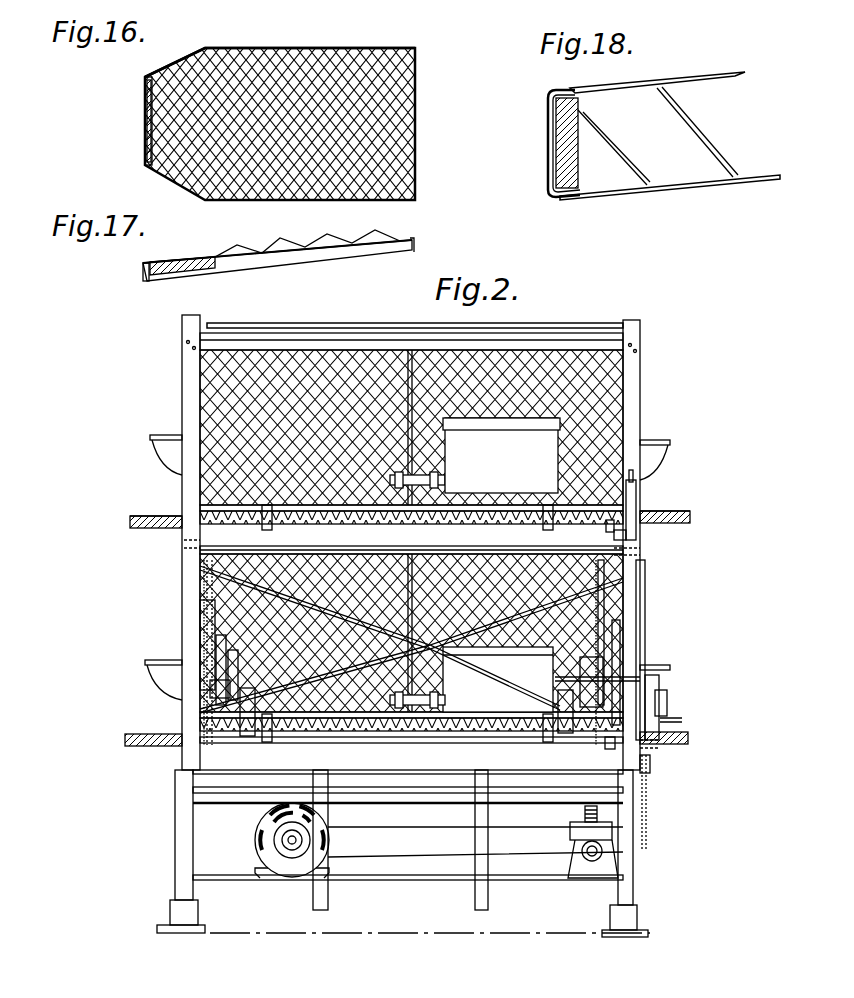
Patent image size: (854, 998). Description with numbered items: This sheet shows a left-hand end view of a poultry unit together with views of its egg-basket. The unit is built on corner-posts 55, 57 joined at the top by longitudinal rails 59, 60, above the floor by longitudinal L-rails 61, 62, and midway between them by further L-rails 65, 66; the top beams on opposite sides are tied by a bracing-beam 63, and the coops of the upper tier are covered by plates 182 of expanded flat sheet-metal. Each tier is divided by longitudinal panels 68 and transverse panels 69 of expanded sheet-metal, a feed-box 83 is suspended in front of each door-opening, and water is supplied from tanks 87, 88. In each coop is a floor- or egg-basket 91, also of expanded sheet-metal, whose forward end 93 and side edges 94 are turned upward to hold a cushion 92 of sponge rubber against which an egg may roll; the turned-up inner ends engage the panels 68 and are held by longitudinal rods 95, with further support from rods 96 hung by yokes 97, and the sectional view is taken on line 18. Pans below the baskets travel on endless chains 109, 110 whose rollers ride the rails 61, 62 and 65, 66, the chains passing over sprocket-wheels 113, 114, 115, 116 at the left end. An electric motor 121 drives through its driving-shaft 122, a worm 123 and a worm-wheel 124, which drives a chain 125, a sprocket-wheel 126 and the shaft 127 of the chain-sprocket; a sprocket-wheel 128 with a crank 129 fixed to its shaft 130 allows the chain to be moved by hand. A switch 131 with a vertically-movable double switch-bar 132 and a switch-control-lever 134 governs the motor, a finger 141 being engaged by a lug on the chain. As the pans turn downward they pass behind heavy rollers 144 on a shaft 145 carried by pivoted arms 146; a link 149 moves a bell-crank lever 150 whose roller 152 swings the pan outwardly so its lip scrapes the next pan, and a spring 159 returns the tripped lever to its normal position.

In FIG. 16, the section line 18— 18 is at (133, 108).
In FIG. 2, the corner-post 55 is at (641, 378).
In FIG. 2, the corner-post 57 is at (182, 388).
In FIG. 2, the longitudinal metal beam or rail 59 is at (641, 323).
In FIG. 2, the longitudinal metal beam or rail 60 is at (201, 318).
In FIG. 2, the longitudinal L-rail 61 is at (605, 775).
In FIG. 2, the longitudinal L-rail 62 is at (205, 762).
In FIG. 2, the bracing-beam 63 is at (560, 334).
In FIG. 2, the longitudinal L-rail 65 is at (636, 553).
In FIG. 2, the longitudinal L-rail 66 is at (208, 542).
In FIG. 2, the longitudinal panel 68 is at (414, 355).
In FIG. 2, the transverse panel 69 is at (360, 355).
In FIG. 2, the feed-box 83 is at (152, 462).
In FIG. 2, the tank 87 is at (512, 460).
In FIG. 2, the tank 88 is at (514, 672).
In FIG. 16, the floor- or egg-basket 91 is at (370, 48).
In FIG. 17, the floor- or egg-basket 91 is at (322, 256).
In FIG. 18, the floor- or egg-basket 91 is at (672, 188).
In FIG. 2, the floor- or egg-basket 91 is at (142, 530).
In FIG. 16, the cushion 92 is at (146, 150).
In FIG. 17, the cushion 92 is at (158, 262).
In FIG. 18, the cushion 92 is at (582, 178).
In FIG. 16, the forward end 93 is at (143, 128).
In FIG. 17, the forward end 93 is at (142, 272).
In FIG. 18, the forward end 93 is at (548, 140).
In FIG. 2, the forward end 93 is at (132, 522).
In FIG. 16, the side edges 94 is at (160, 70).
In FIG. 17, the side edges 94 is at (190, 258).
In FIG. 18, the side edges 94 is at (683, 74).
In FIG. 2, the side edges 94 is at (160, 508).
In FIG. 2, the longitudinally-arranged rod 95 is at (395, 738).
In FIG. 2, the rod 96 is at (268, 531).
In FIG. 2, the yoke 97 is at (548, 532).
In FIG. 2, the endless chain 109 is at (630, 600).
In FIG. 2, the endless chain 110 is at (210, 600).
In FIG. 2, the sprocket-wheel 113 is at (228, 772).
In FIG. 2, the sprocket-wheel 114 is at (184, 544).
In FIG. 2, the sprocket-wheel 115 is at (604, 760).
In FIG. 2, the sprocket-wheel 116 is at (638, 568).
In FIG. 2, the electric motor 121 is at (262, 850).
In FIG. 2, the driving-shaft 122 is at (290, 844).
In FIG. 2, the worm 123 is at (592, 862).
In FIG. 2, the worm-wheel 124 is at (572, 822).
In FIG. 2, the chain 125 is at (647, 812).
In FIG. 2, the sprocket-wheel 126 is at (655, 740).
In FIG. 2, the shaft 127 is at (648, 770).
In FIG. 2, the sprocket-wheel 128 is at (650, 676).
In FIG. 2, the crank 129 is at (660, 718).
In FIG. 2, the shaft 130 is at (662, 690).
In FIG. 2, the switch 131 is at (638, 505).
In FIG. 2, the double switch-bar 132 is at (640, 512).
In FIG. 2, the switch-control-lever 134 is at (640, 505).
In FIG. 2, the finger 141 is at (608, 533).
In FIG. 2, the roller 144 is at (228, 762).
In FIG. 2, the shaft 145 is at (480, 728).
In FIG. 2, the arm 146 is at (200, 650).
In FIG. 2, the link 149 is at (200, 636).
In FIG. 2, the bell-crank lever 150 is at (205, 704).
In FIG. 2, the roller 152 is at (200, 724).
In FIG. 2, the spring 159 is at (200, 618).
In FIG. 2, the plate 182 is at (300, 320).